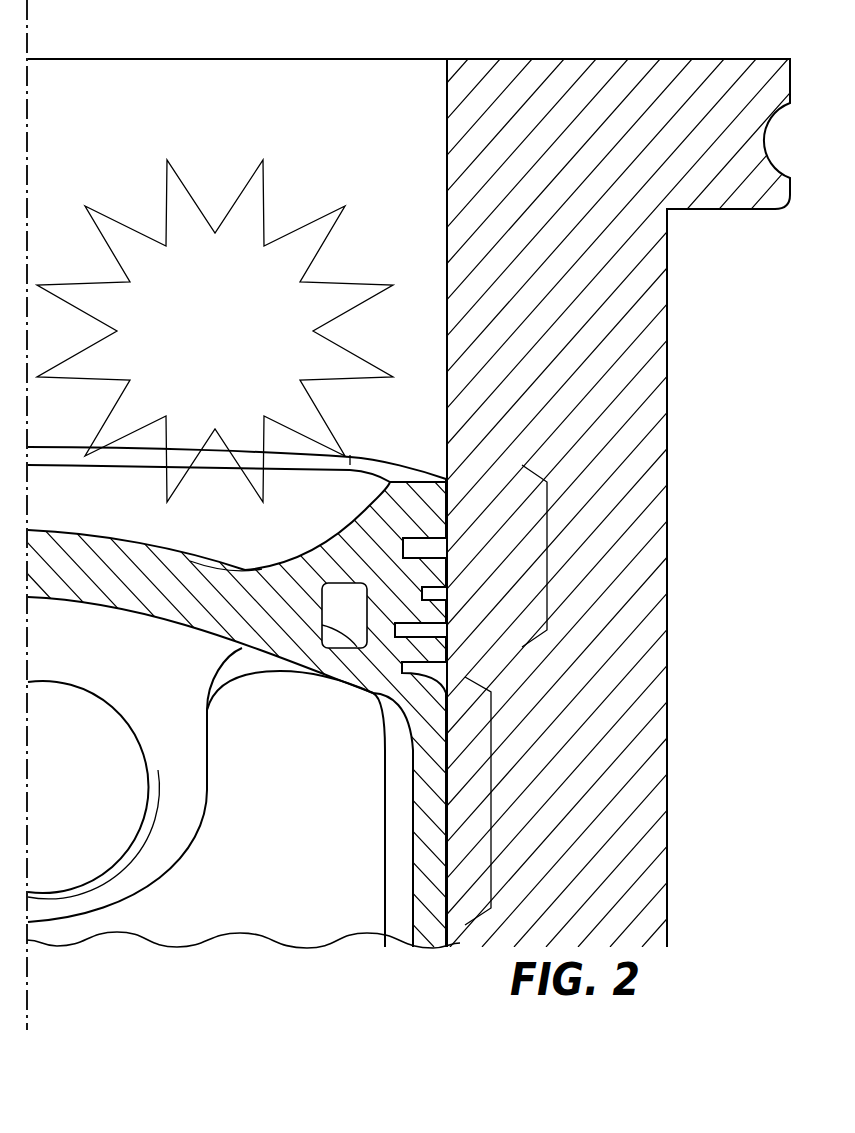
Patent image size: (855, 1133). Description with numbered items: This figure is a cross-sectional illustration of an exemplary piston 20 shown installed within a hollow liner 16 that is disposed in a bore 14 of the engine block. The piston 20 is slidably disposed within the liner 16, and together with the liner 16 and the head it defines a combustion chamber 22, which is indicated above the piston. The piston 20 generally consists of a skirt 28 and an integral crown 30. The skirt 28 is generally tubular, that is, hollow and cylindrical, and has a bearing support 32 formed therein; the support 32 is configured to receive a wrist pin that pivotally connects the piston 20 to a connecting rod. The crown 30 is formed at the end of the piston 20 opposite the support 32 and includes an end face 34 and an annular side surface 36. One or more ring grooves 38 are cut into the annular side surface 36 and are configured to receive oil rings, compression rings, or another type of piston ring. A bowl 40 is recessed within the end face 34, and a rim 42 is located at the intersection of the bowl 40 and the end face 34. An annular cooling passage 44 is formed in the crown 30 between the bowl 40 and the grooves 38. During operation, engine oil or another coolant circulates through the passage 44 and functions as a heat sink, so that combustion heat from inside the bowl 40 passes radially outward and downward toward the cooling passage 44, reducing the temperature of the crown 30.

The bore 14 is at (447, 98).
The hollow liner 16 is at (547, 188).
The piston 20 is at (368, 984).
The combustion chamber 22 is at (227, 116).
The skirt 28 is at (491, 799).
The crown 30 is at (547, 543).
The bearing support 32 is at (196, 803).
The end face 34 is at (392, 472).
The annular side surface 36 is at (447, 514).
The ring grooves 38 is at (426, 592).
The bowl 40 is at (265, 536).
The rim 42 is at (352, 457).
The annular cooling passage 44 is at (334, 627).